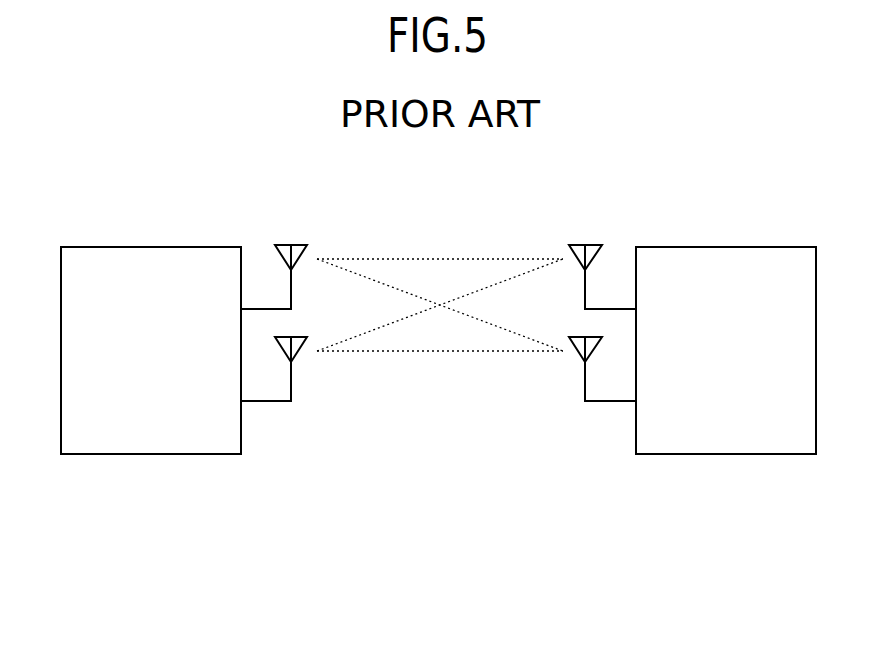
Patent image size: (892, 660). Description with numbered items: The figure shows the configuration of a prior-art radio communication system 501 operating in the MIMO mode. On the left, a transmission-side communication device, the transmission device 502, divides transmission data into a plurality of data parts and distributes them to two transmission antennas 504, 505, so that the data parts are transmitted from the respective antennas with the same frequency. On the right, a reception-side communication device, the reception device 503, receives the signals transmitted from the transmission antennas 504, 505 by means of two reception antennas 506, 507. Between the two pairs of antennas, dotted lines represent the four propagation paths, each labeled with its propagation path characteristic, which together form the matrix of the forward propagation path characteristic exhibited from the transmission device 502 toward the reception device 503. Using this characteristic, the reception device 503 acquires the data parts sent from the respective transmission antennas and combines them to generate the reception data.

The radio communication system 501 is at (438, 404).
The transmission device 502 is at (149, 454).
The reception device 503 is at (725, 454).
The transmission antenna 504 is at (289, 245).
The transmission antenna 505 is at (267, 403).
The reception antenna 506 is at (584, 245).
The reception antenna 507 is at (610, 403).